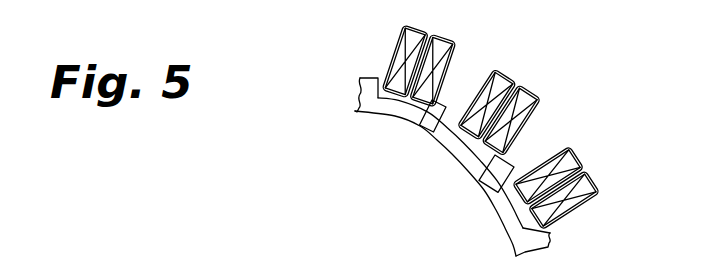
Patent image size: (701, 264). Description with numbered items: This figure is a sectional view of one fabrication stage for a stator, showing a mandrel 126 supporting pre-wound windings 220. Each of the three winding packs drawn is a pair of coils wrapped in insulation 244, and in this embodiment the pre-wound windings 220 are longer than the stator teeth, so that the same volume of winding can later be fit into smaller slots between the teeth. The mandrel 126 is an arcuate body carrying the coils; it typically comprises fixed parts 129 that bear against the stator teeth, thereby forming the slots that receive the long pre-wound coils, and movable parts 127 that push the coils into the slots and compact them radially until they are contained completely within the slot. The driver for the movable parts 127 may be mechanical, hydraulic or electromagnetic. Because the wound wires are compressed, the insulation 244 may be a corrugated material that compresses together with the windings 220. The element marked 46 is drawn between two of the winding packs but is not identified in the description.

The tooth 46 is at (495, 155).
The mandrel 126 is at (447, 167).
The movable parts 127 is at (510, 210).
The fixed parts 129 is at (481, 190).
The windings 220 is at (530, 97).
The insulation 244 is at (539, 112).